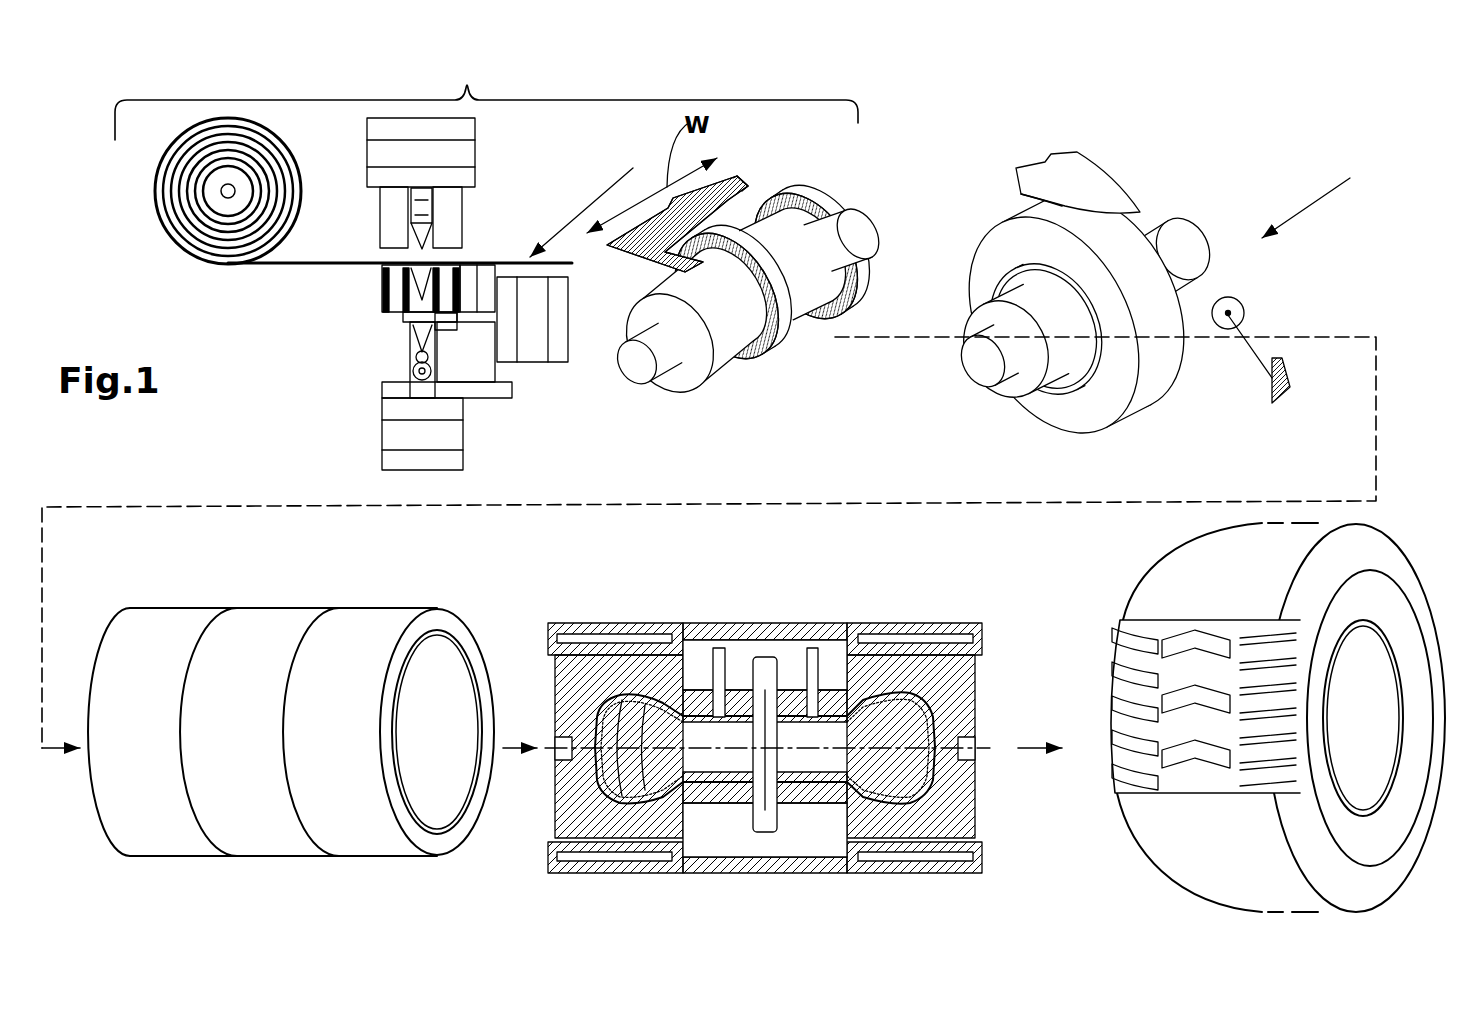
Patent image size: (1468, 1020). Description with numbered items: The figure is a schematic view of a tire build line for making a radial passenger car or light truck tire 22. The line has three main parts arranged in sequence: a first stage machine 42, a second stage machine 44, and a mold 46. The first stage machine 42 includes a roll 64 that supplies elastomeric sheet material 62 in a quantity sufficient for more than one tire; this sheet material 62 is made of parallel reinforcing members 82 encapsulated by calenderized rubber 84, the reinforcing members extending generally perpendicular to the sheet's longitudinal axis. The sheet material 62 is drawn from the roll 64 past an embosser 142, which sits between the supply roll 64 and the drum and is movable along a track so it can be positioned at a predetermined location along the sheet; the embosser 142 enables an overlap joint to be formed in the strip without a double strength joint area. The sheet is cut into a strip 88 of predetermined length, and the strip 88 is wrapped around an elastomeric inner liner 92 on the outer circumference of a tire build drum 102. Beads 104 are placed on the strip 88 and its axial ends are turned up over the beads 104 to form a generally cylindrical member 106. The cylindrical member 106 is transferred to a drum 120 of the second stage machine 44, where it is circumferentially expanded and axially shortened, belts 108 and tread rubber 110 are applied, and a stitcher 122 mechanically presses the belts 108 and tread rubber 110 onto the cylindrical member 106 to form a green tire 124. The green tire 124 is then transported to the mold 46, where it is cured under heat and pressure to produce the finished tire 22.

The tire 22 is at (1187, 582).
The first stage machine 42 is at (486, 95).
The second stage machine 44 is at (1326, 199).
The mold 46 is at (897, 617).
The elastomeric sheet material 62 is at (282, 267).
The roll 64 is at (220, 202).
The reinforcing members 82 is at (767, 187).
The calenderized rubber 84 is at (736, 190).
The strip 88 is at (592, 202).
The elastomeric inner liner 92 is at (663, 281).
The tire build drum 102 is at (683, 383).
The beads 104 is at (767, 347).
The cylindrical member 106 is at (747, 393).
The belts 108 is at (1020, 190).
The tread rubber 110 is at (1062, 178).
The drum 120 is at (1027, 378).
The stitcher 122 is at (1262, 340).
The green tire 124 is at (462, 612).
The embosser 142 is at (490, 162).